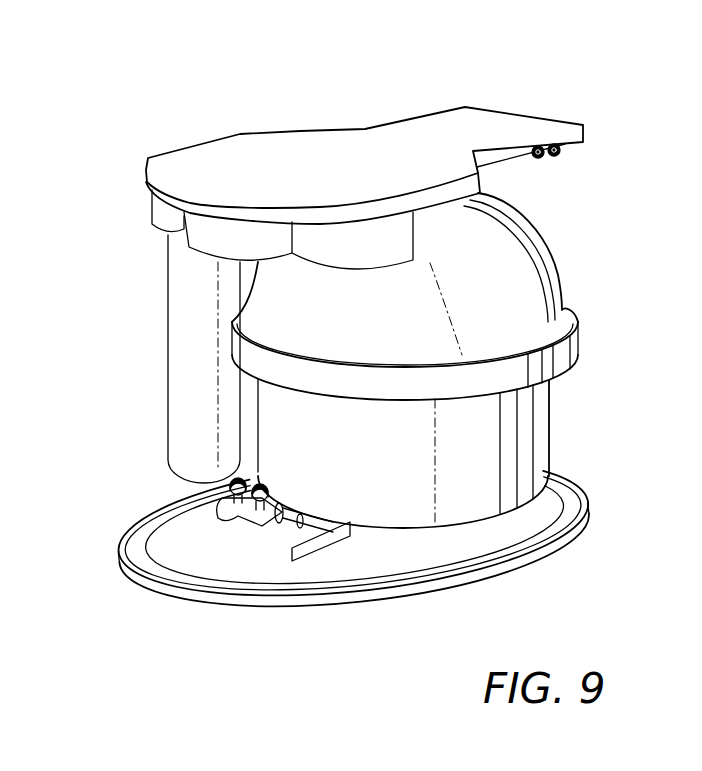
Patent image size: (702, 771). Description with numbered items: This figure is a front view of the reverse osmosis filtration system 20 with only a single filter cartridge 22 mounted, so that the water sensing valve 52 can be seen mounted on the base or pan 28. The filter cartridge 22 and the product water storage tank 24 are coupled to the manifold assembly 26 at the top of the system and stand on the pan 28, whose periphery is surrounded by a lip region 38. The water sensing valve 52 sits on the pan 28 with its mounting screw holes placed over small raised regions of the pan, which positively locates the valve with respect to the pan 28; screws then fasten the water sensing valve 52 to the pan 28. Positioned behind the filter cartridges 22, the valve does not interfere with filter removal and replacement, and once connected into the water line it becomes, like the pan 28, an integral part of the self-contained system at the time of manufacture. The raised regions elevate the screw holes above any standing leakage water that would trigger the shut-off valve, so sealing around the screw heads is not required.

The reverse osmosis filtration system 20 is at (298, 103).
The filter cartridge 22 is at (168, 332).
The product water storage tank 24 is at (513, 287).
The manifold assembly 26 is at (363, 167).
The base or pan 28 is at (165, 619).
The lip region 38 is at (172, 533).
The water sensing valve 52 is at (243, 517).